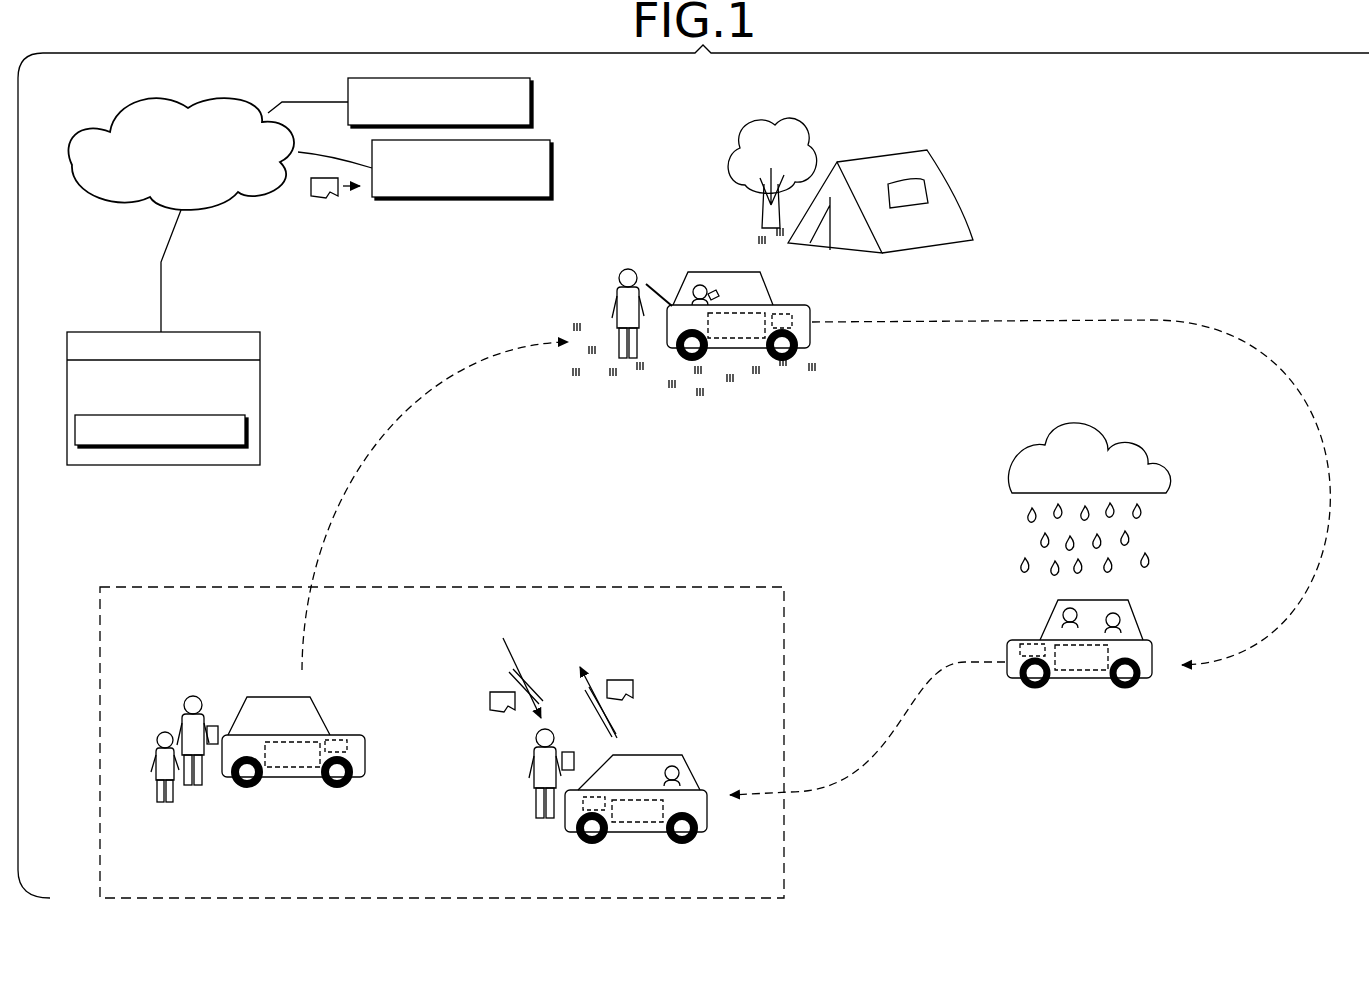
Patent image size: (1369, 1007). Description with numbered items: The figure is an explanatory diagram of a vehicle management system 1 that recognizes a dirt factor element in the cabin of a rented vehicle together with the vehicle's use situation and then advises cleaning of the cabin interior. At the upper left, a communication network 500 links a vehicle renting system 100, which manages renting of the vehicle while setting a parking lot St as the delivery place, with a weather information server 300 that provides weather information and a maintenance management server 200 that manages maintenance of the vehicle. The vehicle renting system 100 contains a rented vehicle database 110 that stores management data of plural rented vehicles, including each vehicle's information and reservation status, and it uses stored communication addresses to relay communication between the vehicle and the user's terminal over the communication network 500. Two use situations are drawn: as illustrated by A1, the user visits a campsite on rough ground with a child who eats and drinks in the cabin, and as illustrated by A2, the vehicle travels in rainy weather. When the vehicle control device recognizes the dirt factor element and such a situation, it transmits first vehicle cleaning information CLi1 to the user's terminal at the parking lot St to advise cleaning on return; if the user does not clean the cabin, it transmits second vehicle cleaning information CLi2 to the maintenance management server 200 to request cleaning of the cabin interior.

The vehicle management system 1 is at (354, 376).
The vehicle renting system 100 is at (190, 332).
The rented vehicle database 110 is at (156, 415).
The maintenance management server 200 is at (550, 172).
The weather information server 300 is at (530, 103).
The communication network 500 is at (128, 114).
The campsite visit situation A1 is at (700, 200).
The rainy weather travel situation A2 is at (1176, 546).
The parking lot St is at (524, 587).
The first vehicle cleaning information CLi1 is at (496, 678).
The second vehicle cleaning information CLi2 is at (335, 198).